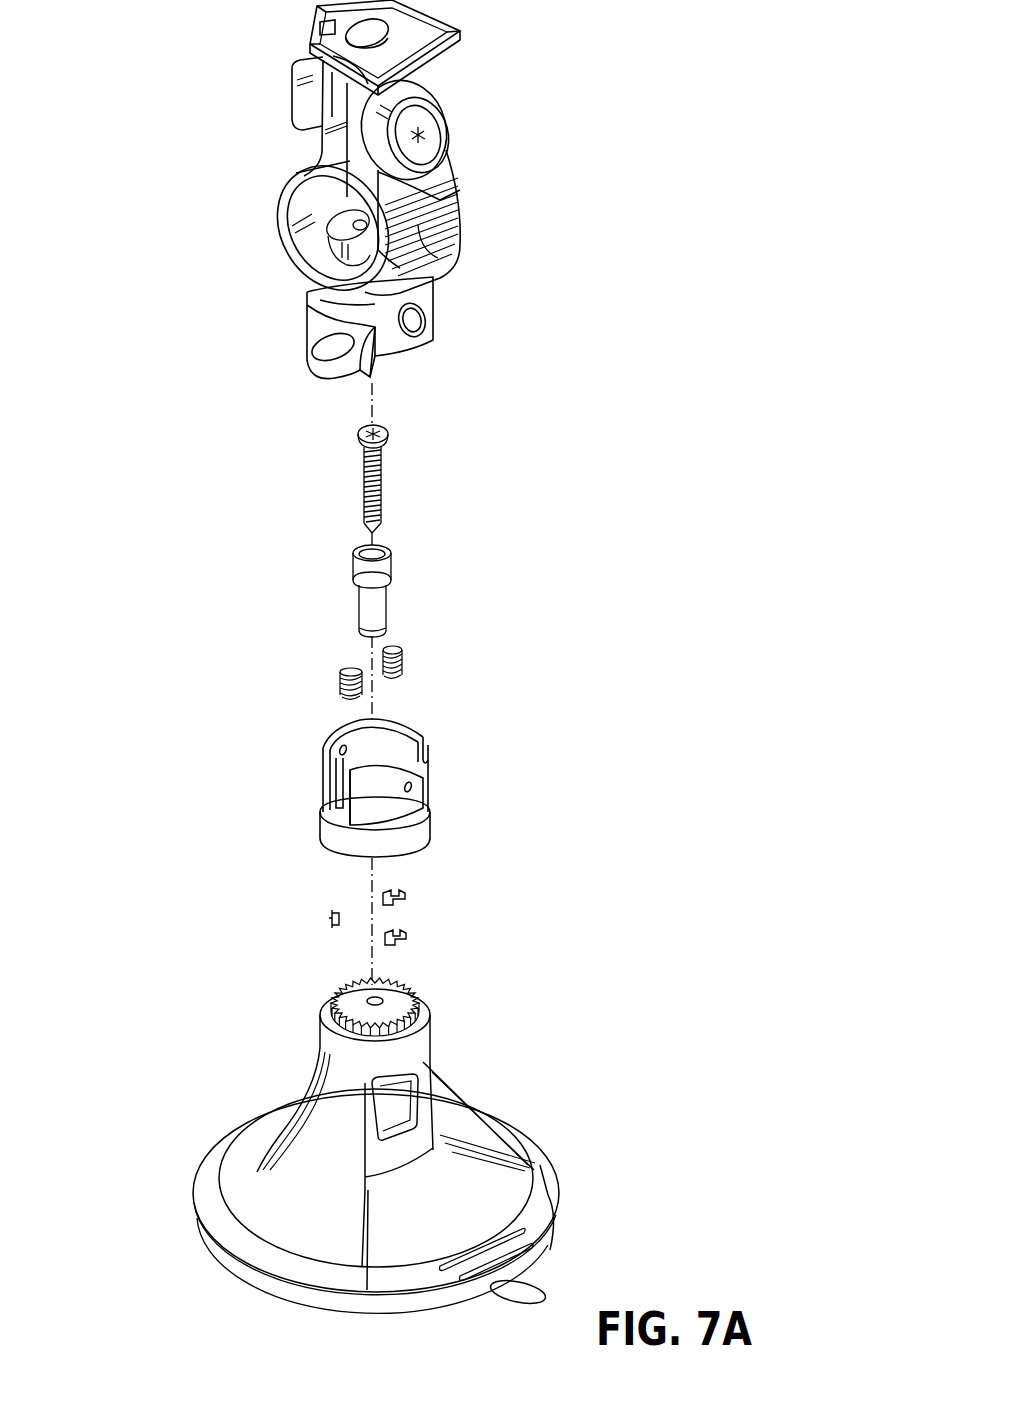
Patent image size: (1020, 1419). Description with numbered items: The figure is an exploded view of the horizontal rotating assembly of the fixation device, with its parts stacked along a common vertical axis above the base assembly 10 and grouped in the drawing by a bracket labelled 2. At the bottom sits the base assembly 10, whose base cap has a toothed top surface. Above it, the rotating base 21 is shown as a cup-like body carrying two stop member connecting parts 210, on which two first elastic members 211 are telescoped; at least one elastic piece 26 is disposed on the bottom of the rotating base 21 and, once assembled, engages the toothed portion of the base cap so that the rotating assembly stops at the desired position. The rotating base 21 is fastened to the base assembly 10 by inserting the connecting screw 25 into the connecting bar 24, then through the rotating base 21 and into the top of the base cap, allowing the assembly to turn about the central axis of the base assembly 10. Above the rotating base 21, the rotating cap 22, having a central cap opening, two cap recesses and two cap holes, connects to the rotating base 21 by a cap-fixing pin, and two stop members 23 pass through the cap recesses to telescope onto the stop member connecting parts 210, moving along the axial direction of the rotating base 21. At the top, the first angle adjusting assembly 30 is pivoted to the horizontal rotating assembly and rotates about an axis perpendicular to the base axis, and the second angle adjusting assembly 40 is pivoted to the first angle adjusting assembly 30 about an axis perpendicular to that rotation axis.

The connecting assembly 2 is at (181, 245).
The base assembly 10 is at (532, 1119).
The rotating base 21 is at (333, 825).
The stop member connecting parts 210 is at (348, 807).
The first elastic members 211 is at (352, 686).
The rotating cap 22 is at (335, 297).
The stop members 23 is at (318, 323).
The connecting bar 24 is at (372, 608).
The connecting screw 25 is at (362, 482).
The elastic piece 26 is at (330, 918).
The first angle adjusting assembly 30 is at (462, 174).
The second angle adjusting assembly 40 is at (462, 36).